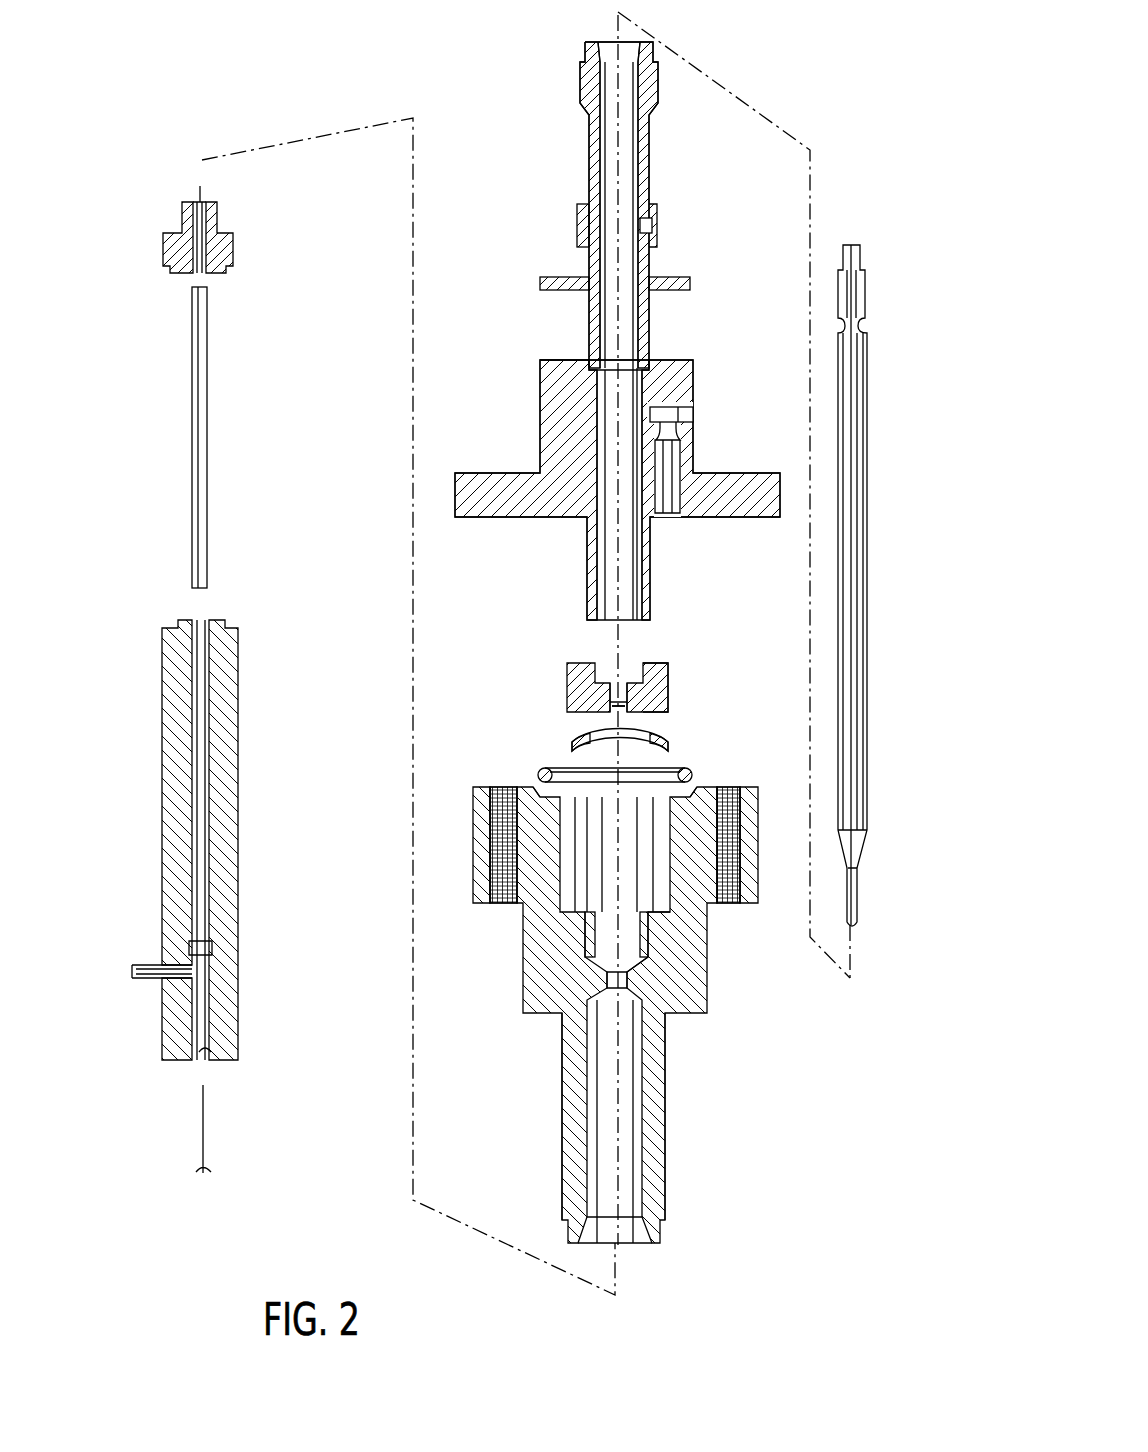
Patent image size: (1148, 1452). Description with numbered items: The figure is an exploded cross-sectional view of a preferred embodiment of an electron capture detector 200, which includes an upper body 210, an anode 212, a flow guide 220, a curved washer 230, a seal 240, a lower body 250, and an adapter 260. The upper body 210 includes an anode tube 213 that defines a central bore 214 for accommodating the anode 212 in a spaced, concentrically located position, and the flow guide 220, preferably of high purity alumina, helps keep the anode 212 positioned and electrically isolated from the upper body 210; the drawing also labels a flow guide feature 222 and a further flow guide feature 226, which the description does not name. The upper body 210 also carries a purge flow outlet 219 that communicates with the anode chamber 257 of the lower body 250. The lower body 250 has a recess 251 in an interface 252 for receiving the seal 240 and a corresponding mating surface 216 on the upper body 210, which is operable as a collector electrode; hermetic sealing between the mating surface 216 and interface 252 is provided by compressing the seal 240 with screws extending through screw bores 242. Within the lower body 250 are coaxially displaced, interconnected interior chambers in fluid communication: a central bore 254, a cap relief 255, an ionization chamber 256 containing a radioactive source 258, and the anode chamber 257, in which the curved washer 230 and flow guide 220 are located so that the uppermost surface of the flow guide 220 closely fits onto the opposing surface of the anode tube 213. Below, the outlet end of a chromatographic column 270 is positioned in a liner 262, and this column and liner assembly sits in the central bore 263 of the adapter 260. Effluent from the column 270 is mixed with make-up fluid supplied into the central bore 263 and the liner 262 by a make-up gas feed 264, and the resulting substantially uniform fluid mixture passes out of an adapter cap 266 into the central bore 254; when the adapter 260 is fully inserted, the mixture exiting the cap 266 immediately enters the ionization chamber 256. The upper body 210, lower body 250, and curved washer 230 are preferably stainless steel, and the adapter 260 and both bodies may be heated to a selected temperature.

The electron capture detector 200 is at (432, 108).
The upper body 210 is at (589, 175).
The anode 212 is at (867, 549).
The anode tube 213 is at (652, 224).
The central bore 214 is at (634, 272).
The mating surface 216 is at (528, 519).
The purge flow outlet 219 is at (693, 415).
The flow guide 220 is at (582, 662).
The bore 222 is at (668, 692).
The orifice 226 is at (616, 714).
The curved washer 230 is at (582, 745).
The seal 240 is at (690, 768).
The screw bores 242 is at (498, 858).
The lower body 250 is at (523, 976).
The recess 251 is at (540, 788).
The interface 252 is at (702, 788).
The central bore 254 is at (665, 1077).
The cap relief 255 is at (625, 980).
The ionization chamber 256 is at (630, 942).
The anode chamber 257 is at (657, 903).
The radioactive source 258 is at (594, 932).
The adapter 260 is at (238, 756).
The liner 262 is at (207, 405).
The central bore 263 is at (206, 1056).
The make-up gas feed 264 is at (152, 982).
The adapter cap 266 is at (233, 250).
The chromatographic column 270 is at (203, 1128).